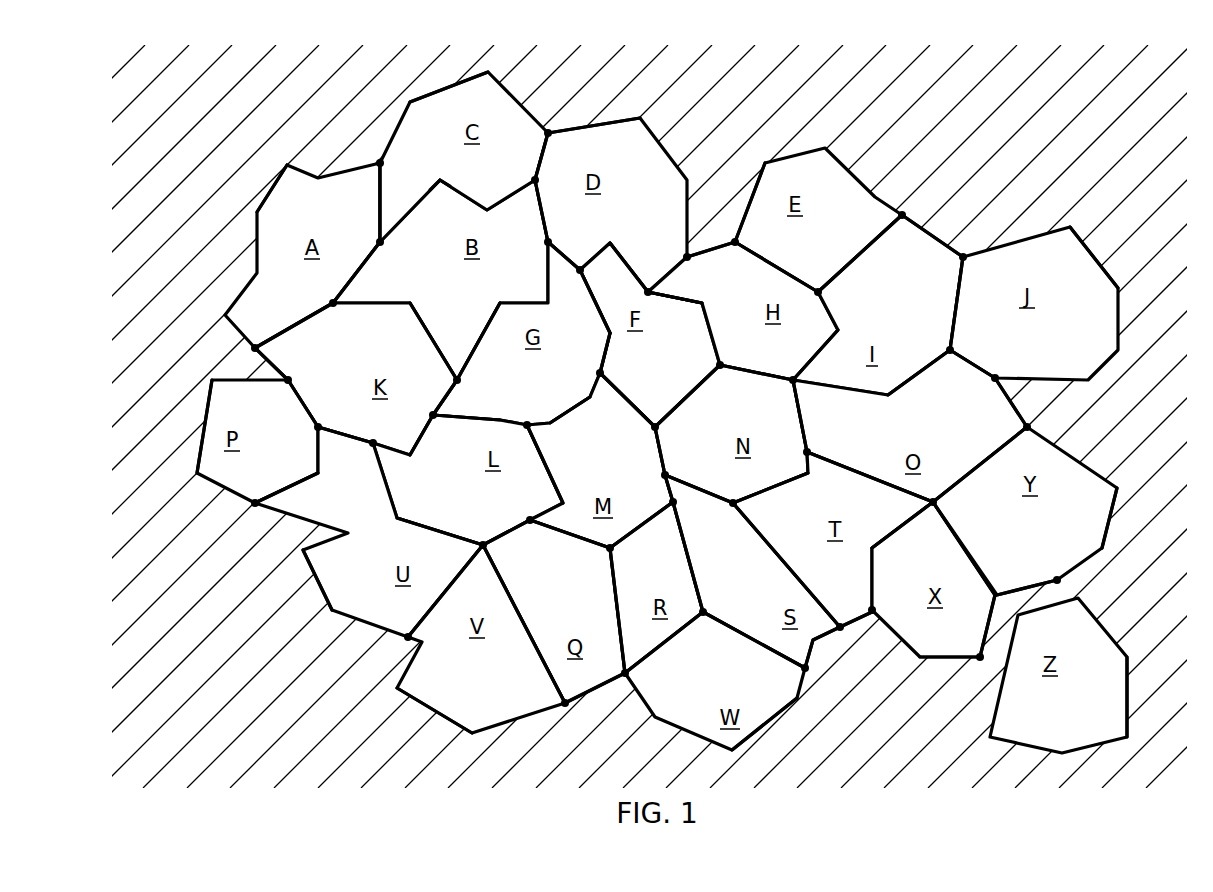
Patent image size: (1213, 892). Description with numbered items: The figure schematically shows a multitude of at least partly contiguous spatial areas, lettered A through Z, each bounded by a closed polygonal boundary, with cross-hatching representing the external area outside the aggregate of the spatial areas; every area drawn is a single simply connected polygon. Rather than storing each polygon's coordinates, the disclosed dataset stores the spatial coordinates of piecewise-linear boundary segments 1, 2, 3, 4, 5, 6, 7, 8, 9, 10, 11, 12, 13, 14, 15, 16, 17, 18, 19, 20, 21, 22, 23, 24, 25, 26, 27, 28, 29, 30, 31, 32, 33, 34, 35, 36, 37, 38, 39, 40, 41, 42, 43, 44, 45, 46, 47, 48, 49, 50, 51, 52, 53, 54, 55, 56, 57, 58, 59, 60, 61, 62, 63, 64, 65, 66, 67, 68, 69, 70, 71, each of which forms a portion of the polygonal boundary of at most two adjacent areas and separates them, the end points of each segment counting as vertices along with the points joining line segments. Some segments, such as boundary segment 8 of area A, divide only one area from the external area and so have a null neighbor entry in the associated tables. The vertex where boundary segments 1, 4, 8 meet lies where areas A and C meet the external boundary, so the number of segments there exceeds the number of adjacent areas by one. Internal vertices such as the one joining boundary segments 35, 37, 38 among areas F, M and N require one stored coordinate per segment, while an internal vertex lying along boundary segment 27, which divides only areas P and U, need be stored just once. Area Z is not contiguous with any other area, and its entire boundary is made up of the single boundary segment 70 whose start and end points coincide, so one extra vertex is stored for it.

The boundary segment 1 is at (422, 96).
The boundary segment 2 is at (438, 181).
The boundary segment 3 is at (541, 158).
The boundary segment 4 is at (379, 193).
The boundary segment 5 is at (541, 215).
The boundary segment 6 is at (426, 327).
The boundary segment 7 is at (357, 273).
The boundary segment 8 is at (268, 195).
The boundary segment 9 is at (298, 325).
The boundary segment 10 is at (268, 362).
The boundary segment 11 is at (440, 397).
The boundary segment 12 is at (478, 360).
The boundary segment 13 is at (578, 271).
The boundary segment 14 is at (626, 258).
The boundary segment 15 is at (596, 122).
The boundary segment 16 is at (712, 245).
The boundary segment 17 is at (660, 280).
The boundary segment 18 is at (683, 306).
The boundary segment 19 is at (612, 350).
The boundary segment 20 is at (565, 412).
The boundary segment 21 is at (483, 424).
The boundary segment 22 is at (422, 445).
The boundary segment 23 is at (357, 433).
The boundary segment 24 is at (294, 398).
The boundary segment 25 is at (200, 435).
The boundary segment 26 is at (318, 580).
The boundary segment 27 is at (297, 487).
The boundary segment 28 is at (403, 522).
The boundary segment 29 is at (425, 707).
The boundary segment 30 is at (433, 607).
The boundary segment 31 is at (527, 637).
The boundary segment 32 is at (507, 533).
The boundary segment 33 is at (570, 537).
The boundary segment 34 is at (548, 472).
The boundary segment 35 is at (623, 397).
The boundary segment 36 is at (668, 492).
The boundary segment 37 is at (665, 455).
The boundary segment 38 is at (688, 398).
The boundary segment 39 is at (747, 367).
The boundary segment 40 is at (767, 262).
The boundary segment 41 is at (773, 160).
The boundary segment 42 is at (860, 252).
The boundary segment 43 is at (832, 333).
The boundary segment 44 is at (802, 415).
The boundary segment 45 is at (790, 480).
The boundary segment 46 is at (698, 492).
The boundary segment 47 is at (647, 520).
The boundary segment 48 is at (617, 617).
The boundary segment 49 is at (600, 688).
The boundary segment 50 is at (757, 732).
The boundary segment 51 is at (660, 647).
The boundary segment 52 is at (763, 647).
The boundary segment 53 is at (692, 572).
The boundary segment 54 is at (826, 638).
The boundary segment 55 is at (860, 617).
The boundary segment 56 is at (810, 587).
The boundary segment 57 is at (878, 481).
The boundary segment 58 is at (913, 378).
The boundary segment 59 is at (955, 305).
The boundary segment 60 is at (933, 234).
The boundary segment 61 is at (972, 365).
The boundary segment 62 is at (1013, 405).
The boundary segment 63 is at (990, 455).
The boundary segment 64 is at (1113, 515).
The boundary segment 65 is at (972, 555).
The boundary segment 66 is at (1027, 585).
The boundary segment 67 is at (887, 540).
The boundary segment 68 is at (938, 660).
The boundary segment 69 is at (986, 628).
The boundary segment 70 is at (1126, 710).
The boundary segment 71 is at (1100, 265).